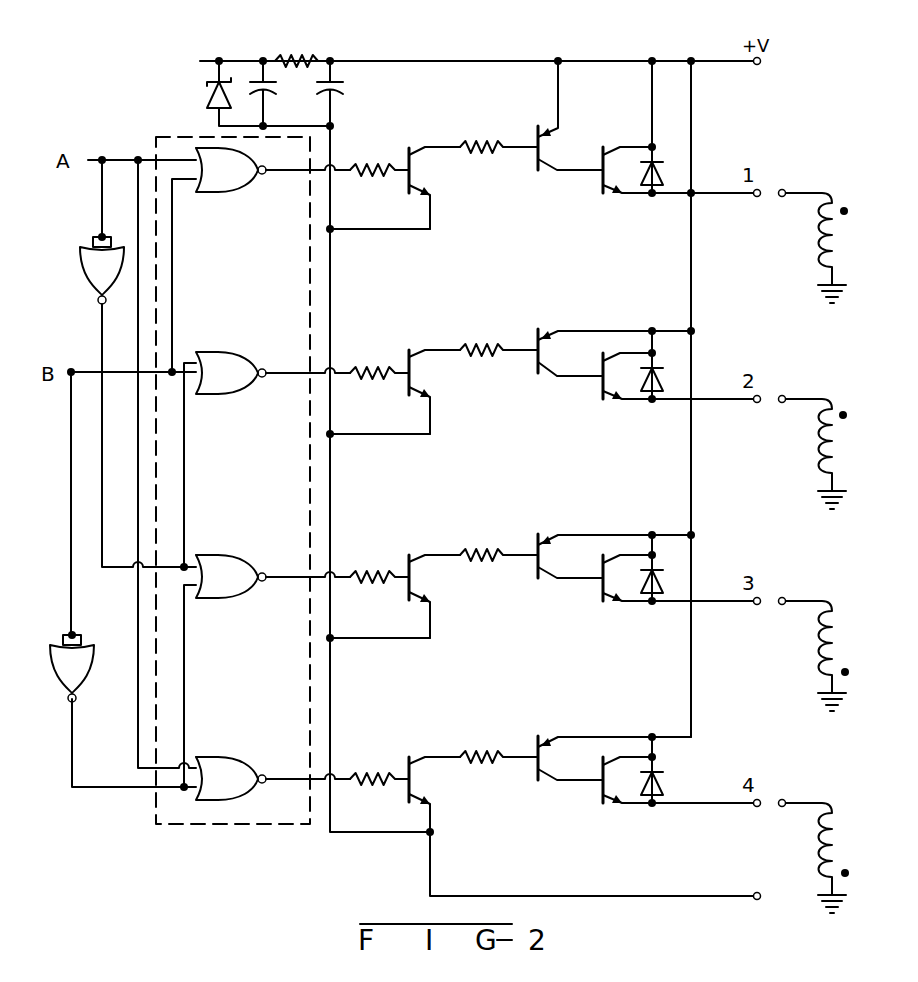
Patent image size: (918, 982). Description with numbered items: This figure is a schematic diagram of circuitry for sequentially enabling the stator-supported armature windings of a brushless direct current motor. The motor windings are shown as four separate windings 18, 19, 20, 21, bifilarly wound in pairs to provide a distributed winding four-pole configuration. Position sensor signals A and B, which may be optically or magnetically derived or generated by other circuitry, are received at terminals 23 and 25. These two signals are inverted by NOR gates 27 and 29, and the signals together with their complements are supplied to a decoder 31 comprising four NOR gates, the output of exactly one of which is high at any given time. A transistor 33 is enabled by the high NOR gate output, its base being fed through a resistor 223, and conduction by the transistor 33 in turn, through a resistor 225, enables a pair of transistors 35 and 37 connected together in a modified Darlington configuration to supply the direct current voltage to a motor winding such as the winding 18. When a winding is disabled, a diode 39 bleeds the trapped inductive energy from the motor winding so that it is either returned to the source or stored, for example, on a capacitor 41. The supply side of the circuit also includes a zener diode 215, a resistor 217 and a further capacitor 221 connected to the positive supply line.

The winding 18 is at (847, 838).
The winding 19 is at (818, 637).
The winding 20 is at (818, 440).
The winding 21 is at (840, 245).
The terminal 23 is at (90, 158).
The terminal 25 is at (71, 370).
The NOR gate 27 is at (83, 276).
The NOR gate 29 is at (56, 681).
The decoder 31 is at (215, 826).
The transistor 33 is at (414, 152).
The transistor 35 is at (543, 182).
The transistor 37 is at (605, 148).
The diode 39 is at (668, 162).
The capacitor 41 is at (253, 76).
The zener diode 215 is at (206, 94).
The resistor 217 is at (296, 57).
The capacitor 221 is at (337, 94).
The resistor 223 is at (372, 178).
The resistor 225 is at (484, 134).